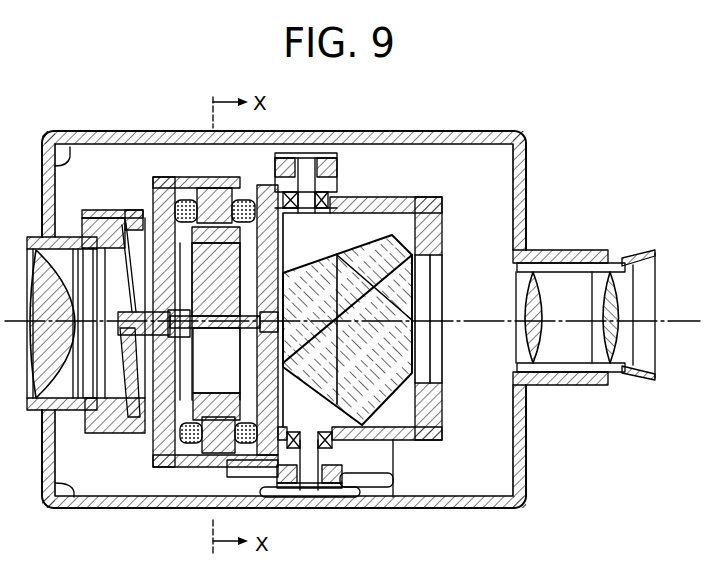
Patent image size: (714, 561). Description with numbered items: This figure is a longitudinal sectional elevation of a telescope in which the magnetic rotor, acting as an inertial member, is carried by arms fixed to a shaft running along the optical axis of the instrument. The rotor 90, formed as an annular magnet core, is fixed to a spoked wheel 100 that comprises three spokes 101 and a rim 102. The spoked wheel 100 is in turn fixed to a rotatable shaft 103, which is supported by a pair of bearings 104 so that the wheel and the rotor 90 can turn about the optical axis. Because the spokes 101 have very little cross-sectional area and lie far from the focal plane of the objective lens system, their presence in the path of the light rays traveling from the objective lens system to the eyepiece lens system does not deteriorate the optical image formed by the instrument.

The rotor 90 is at (188, 233).
The spoked wheel 100 is at (184, 283).
The spokes 101 is at (232, 277).
The rim 102 is at (227, 387).
The rotatable shaft 103 is at (186, 318).
The bearings 104 is at (232, 343).